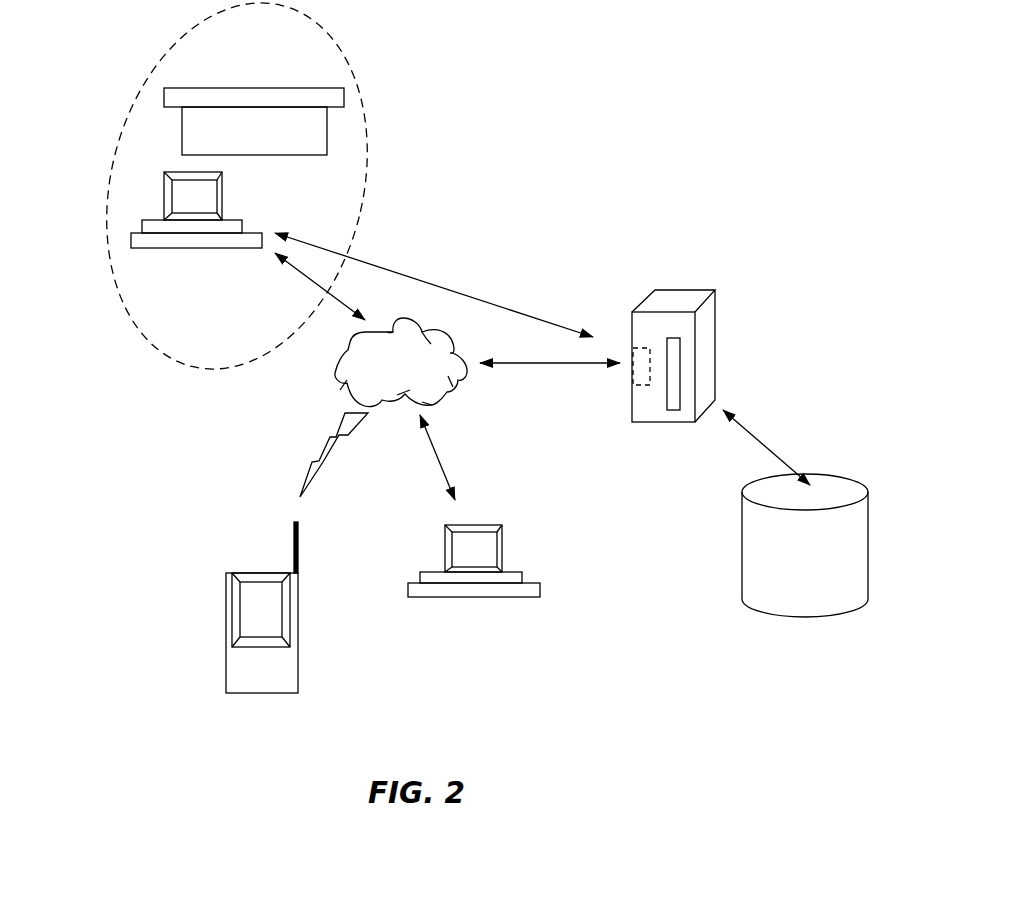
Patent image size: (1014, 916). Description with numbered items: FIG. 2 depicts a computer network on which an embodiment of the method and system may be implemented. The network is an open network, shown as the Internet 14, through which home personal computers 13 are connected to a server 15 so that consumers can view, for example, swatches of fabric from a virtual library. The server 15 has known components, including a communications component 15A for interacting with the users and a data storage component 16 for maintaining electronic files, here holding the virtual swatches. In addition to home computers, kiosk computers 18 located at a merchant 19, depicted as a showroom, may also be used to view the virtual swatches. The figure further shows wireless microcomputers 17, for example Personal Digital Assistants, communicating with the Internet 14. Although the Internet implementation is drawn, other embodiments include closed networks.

The home personal computers 13 is at (515, 553).
The Internet 14 is at (453, 382).
The server 15 is at (629, 324).
The communications component 15A is at (633, 382).
The data storage component 16 is at (863, 480).
The wireless microcomputers 17 is at (227, 600).
The kiosk computers 18 is at (220, 213).
The merchant 19 is at (126, 148).